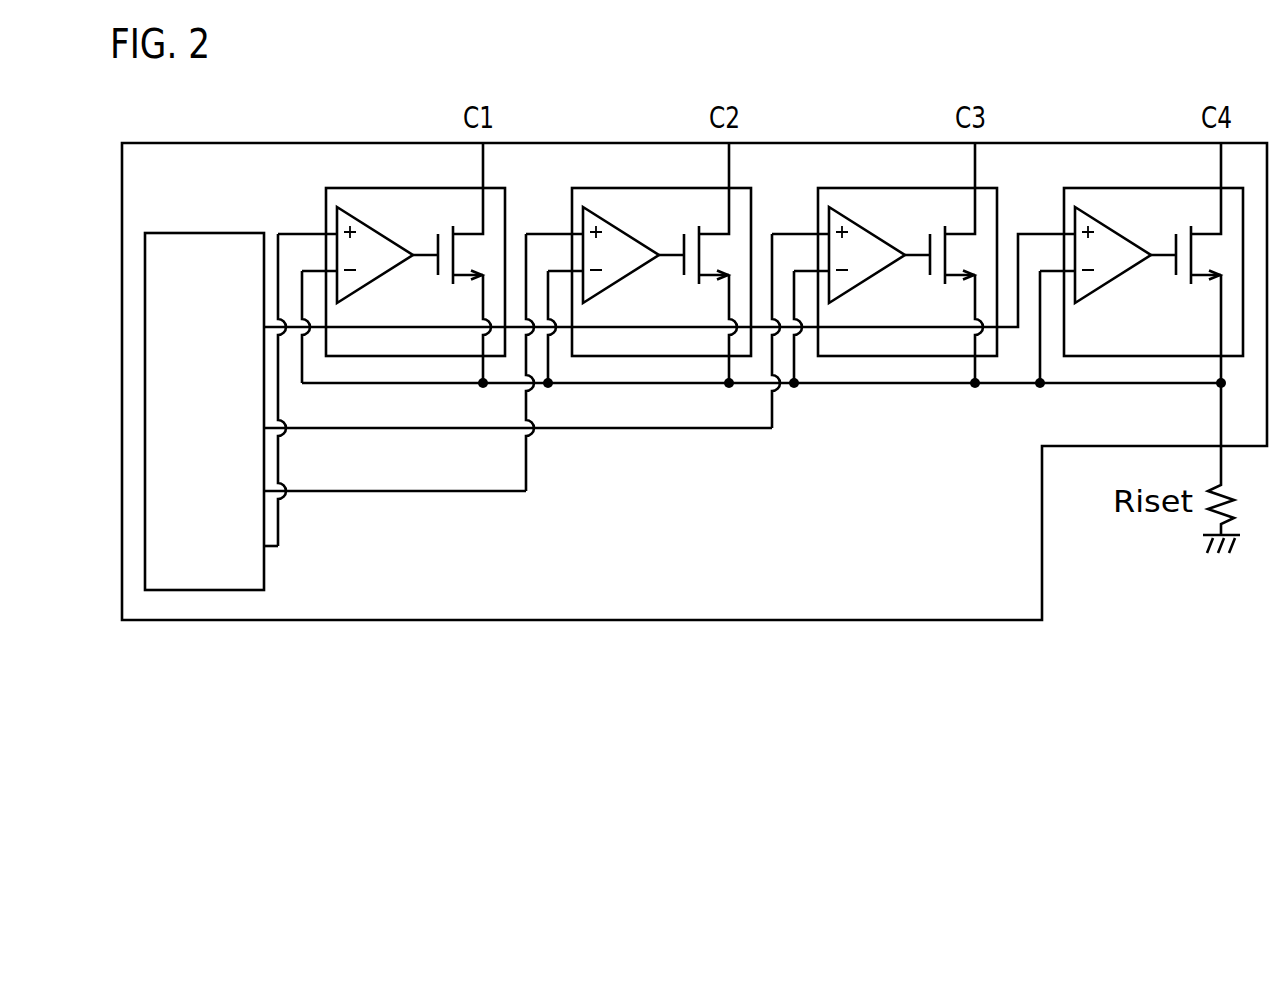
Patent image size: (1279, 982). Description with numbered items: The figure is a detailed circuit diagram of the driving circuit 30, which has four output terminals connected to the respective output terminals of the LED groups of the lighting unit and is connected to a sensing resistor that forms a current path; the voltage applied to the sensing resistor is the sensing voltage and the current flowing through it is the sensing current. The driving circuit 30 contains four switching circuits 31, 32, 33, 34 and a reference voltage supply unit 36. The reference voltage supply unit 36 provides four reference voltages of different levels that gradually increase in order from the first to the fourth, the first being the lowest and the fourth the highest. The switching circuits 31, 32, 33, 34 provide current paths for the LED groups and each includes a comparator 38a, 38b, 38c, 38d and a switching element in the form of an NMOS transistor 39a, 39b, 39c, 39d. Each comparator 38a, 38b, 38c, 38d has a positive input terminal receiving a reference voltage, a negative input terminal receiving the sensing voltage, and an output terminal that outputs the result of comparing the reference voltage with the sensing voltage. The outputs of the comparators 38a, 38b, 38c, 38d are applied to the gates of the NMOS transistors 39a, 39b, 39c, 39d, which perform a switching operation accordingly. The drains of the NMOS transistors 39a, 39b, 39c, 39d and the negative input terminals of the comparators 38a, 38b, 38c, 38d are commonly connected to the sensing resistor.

The driving circuit 30 is at (326, 620).
The switching circuit 31 is at (415, 249).
The switching circuit 32 is at (661, 249).
The switching circuit 33 is at (907, 249).
The switching circuit 34 is at (1153, 249).
The reference voltage supply unit 36 is at (184, 232).
The comparator 38a is at (375, 265).
The comparator 38b is at (621, 265).
The comparator 38c is at (867, 265).
The comparator 38d is at (1113, 265).
The NMOS transistor 39a is at (438, 213).
The NMOS transistor 39b is at (684, 213).
The NMOS transistor 39c is at (930, 213).
The NMOS transistor 39d is at (1176, 213).